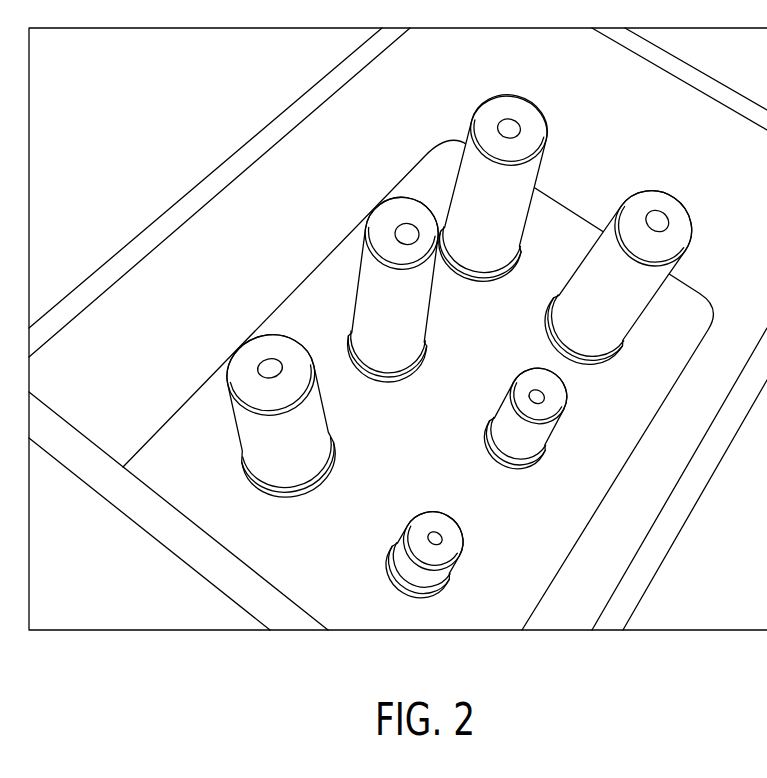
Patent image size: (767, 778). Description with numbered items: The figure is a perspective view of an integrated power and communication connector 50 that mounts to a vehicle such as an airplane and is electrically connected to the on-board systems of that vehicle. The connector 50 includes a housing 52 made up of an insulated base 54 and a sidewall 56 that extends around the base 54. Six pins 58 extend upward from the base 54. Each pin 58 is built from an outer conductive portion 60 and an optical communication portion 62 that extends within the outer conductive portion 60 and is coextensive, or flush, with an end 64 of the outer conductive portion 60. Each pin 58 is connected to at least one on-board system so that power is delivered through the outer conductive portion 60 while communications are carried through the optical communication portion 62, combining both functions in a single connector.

The integrated power and communication connector 50 is at (398, 329).
The housing 52 is at (178, 208).
The insulated base 54 is at (273, 543).
The sidewall 56 is at (258, 597).
The pin 58 is at (439, 329).
The outer conductive portion 60 is at (512, 188).
The optical communication portion 62 is at (514, 127).
The end 64 is at (481, 123).